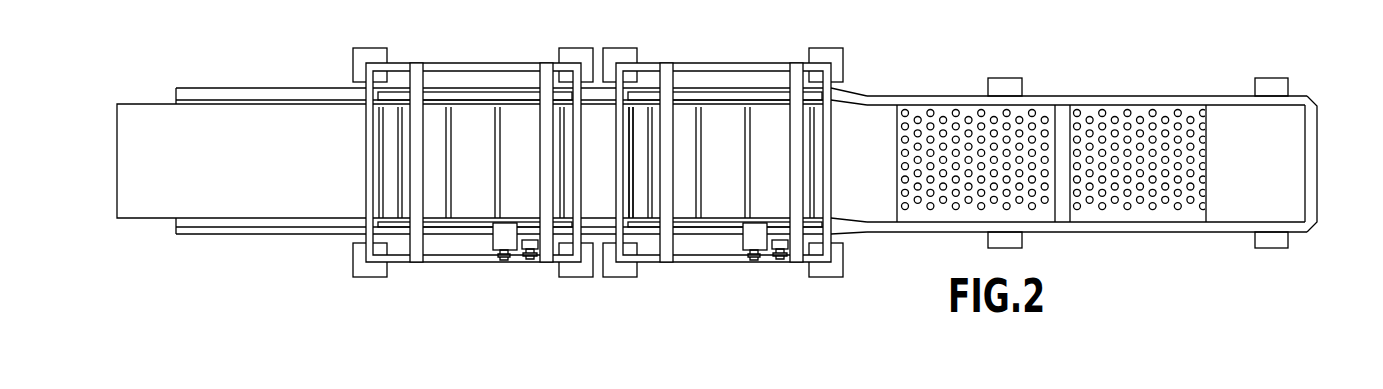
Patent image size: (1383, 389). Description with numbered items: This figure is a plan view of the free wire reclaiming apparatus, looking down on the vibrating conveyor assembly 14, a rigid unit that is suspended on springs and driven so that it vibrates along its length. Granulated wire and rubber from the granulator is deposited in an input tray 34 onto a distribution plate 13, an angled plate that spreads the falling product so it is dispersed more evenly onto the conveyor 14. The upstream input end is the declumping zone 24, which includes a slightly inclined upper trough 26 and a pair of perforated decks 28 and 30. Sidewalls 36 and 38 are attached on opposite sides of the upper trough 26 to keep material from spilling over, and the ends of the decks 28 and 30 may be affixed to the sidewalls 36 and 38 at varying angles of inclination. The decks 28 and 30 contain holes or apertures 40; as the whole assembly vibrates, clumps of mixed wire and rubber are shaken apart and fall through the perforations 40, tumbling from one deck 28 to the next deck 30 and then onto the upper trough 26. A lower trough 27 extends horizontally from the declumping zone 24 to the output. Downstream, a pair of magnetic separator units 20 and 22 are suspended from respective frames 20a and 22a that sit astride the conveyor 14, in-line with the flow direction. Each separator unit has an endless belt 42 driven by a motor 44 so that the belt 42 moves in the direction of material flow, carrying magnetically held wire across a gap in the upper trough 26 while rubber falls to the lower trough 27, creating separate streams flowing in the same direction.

The distribution plate 13 is at (1282, 190).
The vibrating conveyor assembly 14 is at (1317, 158).
The magnetic separator unit 20 is at (725, 115).
The frame 20a is at (722, 62).
The magnetic separator unit 22 is at (480, 115).
The frame 22a is at (475, 62).
The declumping zone 24 is at (1180, 160).
The upper trough 26 is at (148, 112).
The lower trough 27 is at (173, 228).
The perforated deck 28 is at (1118, 113).
The perforated deck 30 is at (945, 112).
The input tray 34 is at (1272, 120).
The sidewall 36 is at (1202, 98).
The sidewall 38 is at (1223, 228).
The holes or apertures 40 is at (935, 212).
The endless belt 42 is at (805, 158).
The motor 44 is at (740, 243).